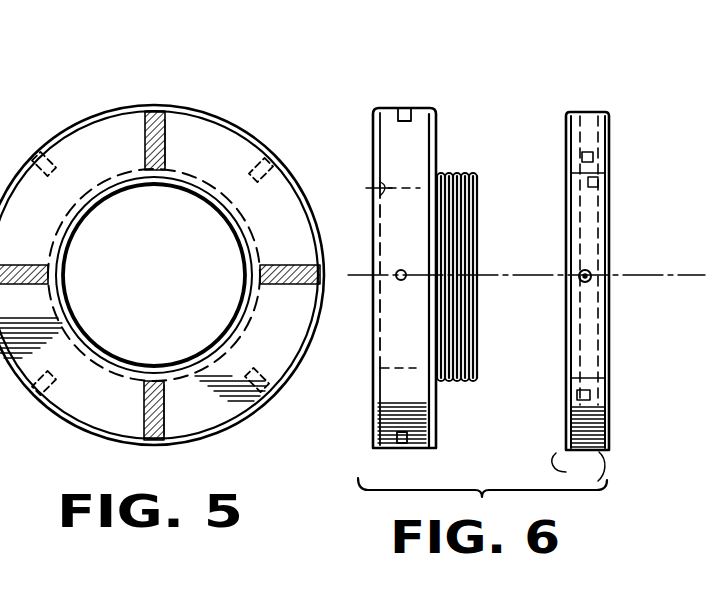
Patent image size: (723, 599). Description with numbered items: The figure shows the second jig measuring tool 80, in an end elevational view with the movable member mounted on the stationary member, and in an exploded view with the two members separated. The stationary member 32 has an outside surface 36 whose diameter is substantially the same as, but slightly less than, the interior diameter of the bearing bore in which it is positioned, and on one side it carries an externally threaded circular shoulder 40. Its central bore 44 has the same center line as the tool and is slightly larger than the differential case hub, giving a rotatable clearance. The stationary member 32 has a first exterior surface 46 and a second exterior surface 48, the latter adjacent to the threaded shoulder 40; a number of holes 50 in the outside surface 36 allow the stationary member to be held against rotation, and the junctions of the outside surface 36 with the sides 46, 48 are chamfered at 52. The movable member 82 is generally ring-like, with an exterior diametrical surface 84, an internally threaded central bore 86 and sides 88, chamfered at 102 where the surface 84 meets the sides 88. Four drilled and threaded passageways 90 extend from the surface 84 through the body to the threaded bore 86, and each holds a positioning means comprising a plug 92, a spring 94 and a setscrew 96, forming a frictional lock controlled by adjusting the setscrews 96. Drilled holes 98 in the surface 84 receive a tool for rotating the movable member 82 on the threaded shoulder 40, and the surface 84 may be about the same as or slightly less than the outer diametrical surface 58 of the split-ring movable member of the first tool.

In FIG. 6, the stationary member 32 is at (432, 104).
In FIG. 6, the outside surface 36 is at (402, 108).
In FIG. 6, the circular shoulder 40 is at (456, 172).
In FIG. 5, the central bore 44 is at (231, 231).
In FIG. 6, the central bore 44 is at (375, 194).
In FIG. 6, the first exterior surface 46 is at (372, 137).
In FIG. 6, the second exterior surface 48 is at (441, 136).
In FIG. 6, the holes 50 is at (407, 108).
In FIG. 6, the chamfer 52 is at (389, 108).
In FIG. 6, the outer diametrical surface 58 is at (395, 383).
In FIG. 5, the second jig measuring tool 80 is at (210, 111).
In FIG. 6, the movable member 82 is at (601, 106).
In FIG. 6, the exterior diametrical surface 84 is at (578, 112).
In FIG. 6, the central bore 86 is at (606, 185).
In FIG. 5, the sides 88 is at (86, 420).
In FIG. 6, the sides 88 is at (568, 148).
In FIG. 5, the drilled and threaded passageways 90 is at (167, 160).
In FIG. 5, the plug 92 is at (64, 261).
In FIG. 5, the spring 94 is at (143, 137).
In FIG. 5, the setscrew 96 is at (158, 105).
In FIG. 6, the setscrew 96 is at (580, 283).
In FIG. 5, the drilled holes 98 is at (37, 162).
In FIG. 6, the drilled holes 98 is at (595, 155).
In FIG. 5, the chamfer 102 is at (258, 147).
In FIG. 6, the chamfer 102 is at (569, 112).